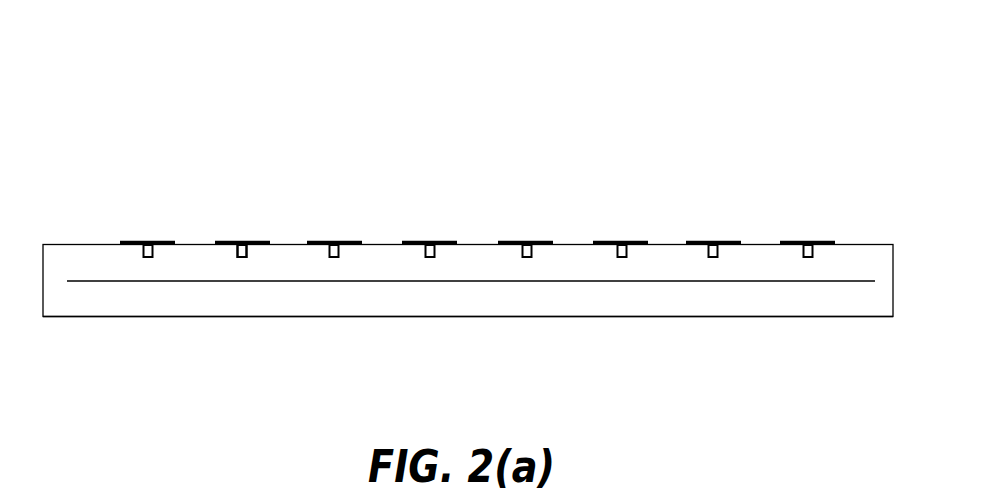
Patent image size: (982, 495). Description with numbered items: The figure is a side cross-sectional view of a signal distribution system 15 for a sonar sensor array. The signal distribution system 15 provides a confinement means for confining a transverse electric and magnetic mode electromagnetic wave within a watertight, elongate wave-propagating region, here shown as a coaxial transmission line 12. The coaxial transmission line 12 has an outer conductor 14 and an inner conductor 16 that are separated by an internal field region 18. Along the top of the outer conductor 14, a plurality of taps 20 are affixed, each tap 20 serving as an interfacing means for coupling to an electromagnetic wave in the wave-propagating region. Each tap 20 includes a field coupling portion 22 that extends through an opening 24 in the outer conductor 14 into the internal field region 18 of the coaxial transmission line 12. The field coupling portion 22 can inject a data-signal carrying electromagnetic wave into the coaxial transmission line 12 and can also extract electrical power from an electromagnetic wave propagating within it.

The coaxial transmission line 12 is at (866, 245).
The outer conductor 14 is at (620, 317).
The signal distribution system 15 is at (132, 108).
The inner conductor 16 is at (733, 282).
The internal field region 18 is at (180, 300).
The tap 20 is at (410, 243).
The field coupling portion 22 is at (435, 256).
The opening 24 is at (246, 257).